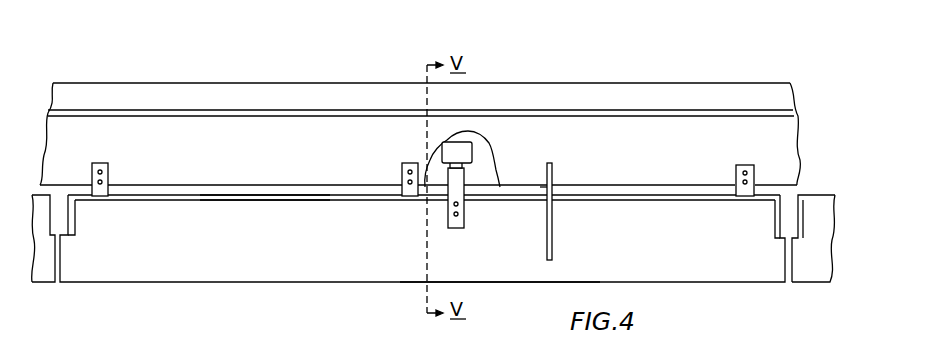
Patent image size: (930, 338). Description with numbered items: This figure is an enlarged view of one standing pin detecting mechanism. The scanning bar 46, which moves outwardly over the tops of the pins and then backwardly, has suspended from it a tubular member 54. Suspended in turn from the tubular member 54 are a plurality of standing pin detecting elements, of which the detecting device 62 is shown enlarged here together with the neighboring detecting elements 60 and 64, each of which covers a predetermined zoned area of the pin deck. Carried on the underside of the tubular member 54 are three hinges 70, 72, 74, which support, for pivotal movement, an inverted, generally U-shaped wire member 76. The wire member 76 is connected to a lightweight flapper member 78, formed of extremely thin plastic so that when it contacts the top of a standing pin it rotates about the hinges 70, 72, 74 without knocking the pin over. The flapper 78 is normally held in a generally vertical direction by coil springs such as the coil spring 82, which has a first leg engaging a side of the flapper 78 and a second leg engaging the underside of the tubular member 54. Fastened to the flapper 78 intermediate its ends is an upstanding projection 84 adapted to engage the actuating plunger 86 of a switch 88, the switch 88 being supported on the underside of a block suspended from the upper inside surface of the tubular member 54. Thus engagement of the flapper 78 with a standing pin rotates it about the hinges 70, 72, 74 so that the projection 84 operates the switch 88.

The scanning bar 46 is at (147, 84).
The tubular member 54 is at (254, 133).
The standing pin detecting element 60 is at (47, 283).
The detecting device 62 is at (265, 280).
The standing pin detecting element 64 is at (817, 283).
The hinge 70 is at (108, 173).
The hinge 72 is at (402, 164).
The hinge 74 is at (736, 170).
The wire member 76 is at (266, 194).
The flapper member 78 is at (513, 274).
The coil spring 82 is at (552, 222).
The upstanding projection 84 is at (463, 203).
The actuating plunger 86 is at (462, 165).
The switch 88 is at (468, 150).